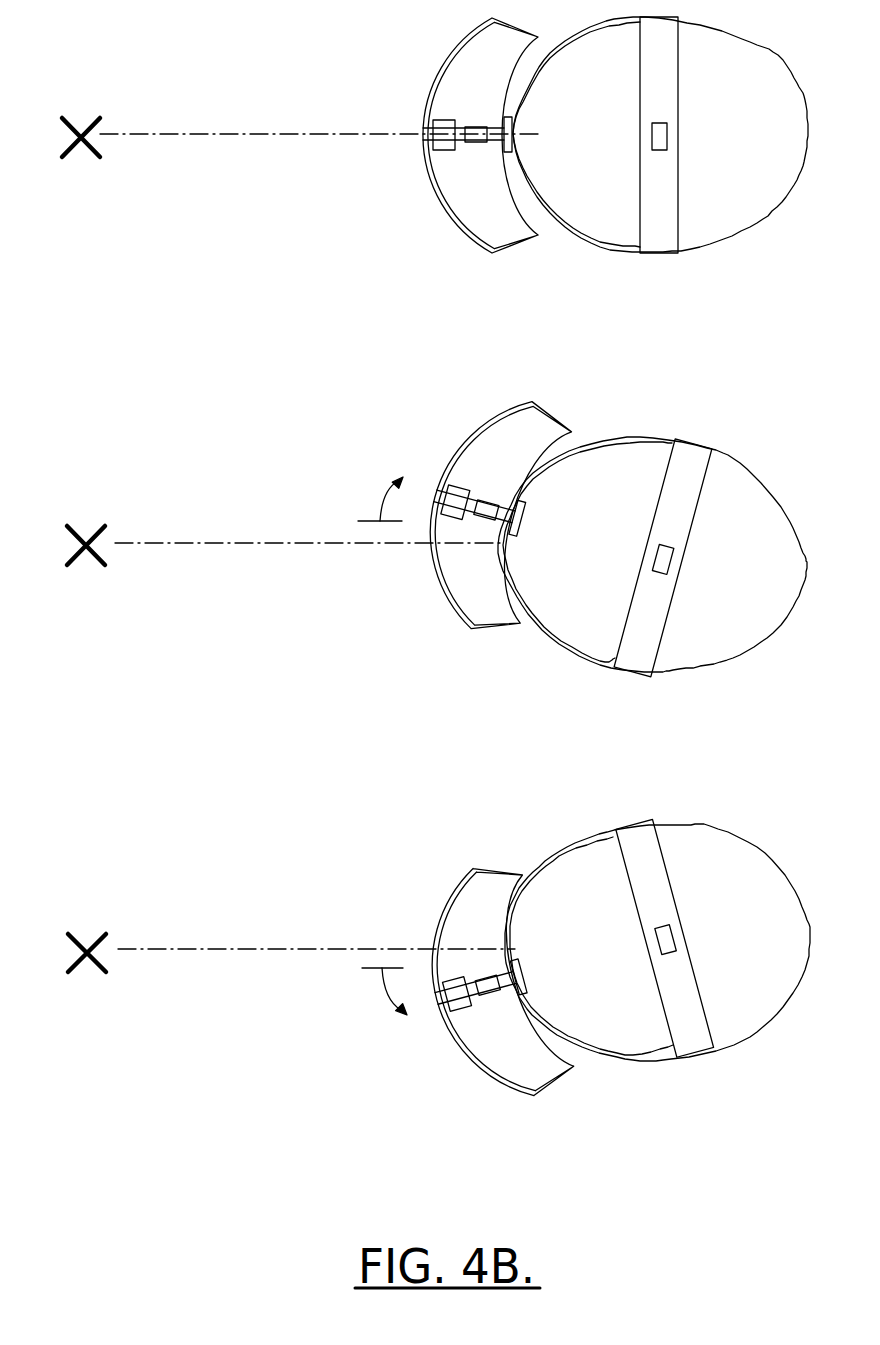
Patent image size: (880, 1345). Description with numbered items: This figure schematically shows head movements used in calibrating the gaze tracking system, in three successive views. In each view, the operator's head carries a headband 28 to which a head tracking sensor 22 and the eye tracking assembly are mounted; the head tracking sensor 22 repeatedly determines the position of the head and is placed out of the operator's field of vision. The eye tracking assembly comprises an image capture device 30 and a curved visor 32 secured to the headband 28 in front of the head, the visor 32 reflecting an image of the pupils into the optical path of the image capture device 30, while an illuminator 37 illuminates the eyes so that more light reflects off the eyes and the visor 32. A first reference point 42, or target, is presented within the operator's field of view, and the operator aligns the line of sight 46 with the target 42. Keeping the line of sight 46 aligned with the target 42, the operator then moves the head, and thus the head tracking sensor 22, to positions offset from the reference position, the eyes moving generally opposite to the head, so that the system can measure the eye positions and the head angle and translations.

The head tracking sensor 22 is at (662, 118).
The headband 28 is at (657, 254).
The image capture device 30 is at (440, 121).
The visor 32 is at (462, 237).
The illuminator 37 is at (472, 127).
The first reference point 42 is at (88, 115).
The line of sight 46 is at (206, 130).